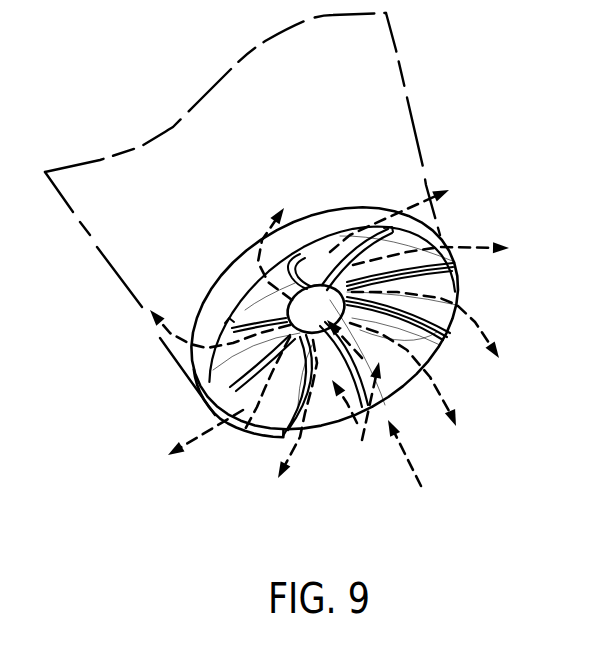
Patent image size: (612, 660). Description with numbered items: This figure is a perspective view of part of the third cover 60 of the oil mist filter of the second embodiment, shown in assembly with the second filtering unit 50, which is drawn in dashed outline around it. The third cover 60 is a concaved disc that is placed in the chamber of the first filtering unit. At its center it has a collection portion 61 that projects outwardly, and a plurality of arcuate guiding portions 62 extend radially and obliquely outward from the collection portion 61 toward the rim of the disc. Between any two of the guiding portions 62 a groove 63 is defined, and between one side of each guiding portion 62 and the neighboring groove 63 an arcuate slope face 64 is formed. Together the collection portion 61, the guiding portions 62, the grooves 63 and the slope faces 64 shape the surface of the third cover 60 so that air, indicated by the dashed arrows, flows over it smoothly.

The second filtering unit 50 is at (94, 265).
The third cover 60 is at (252, 448).
The collection portion 61 is at (318, 304).
The guiding portions 62 is at (416, 330).
The groove 63 is at (400, 365).
The arcuate slope face 64 is at (438, 333).